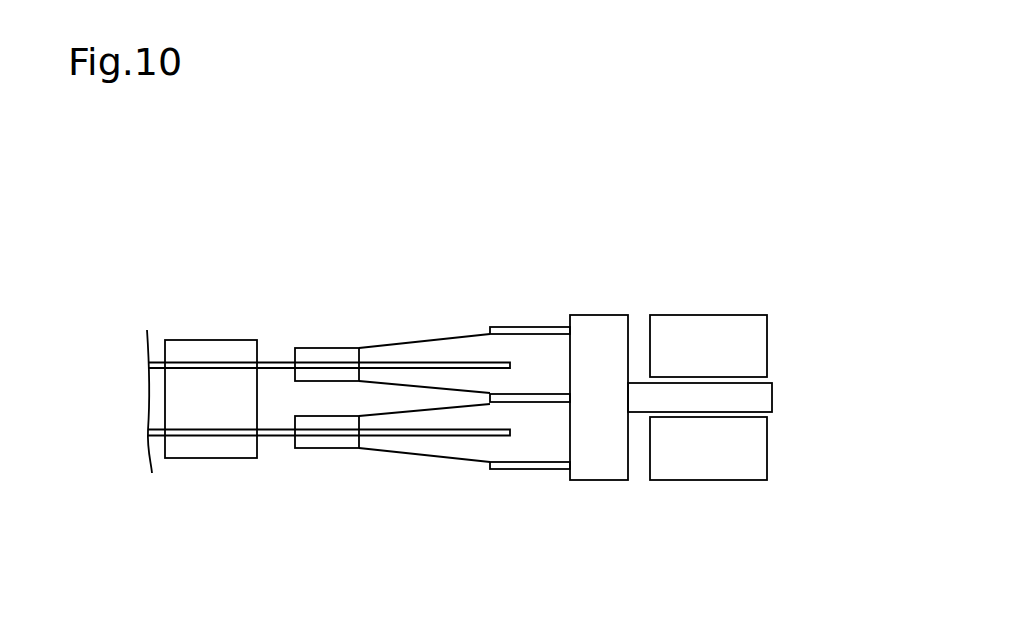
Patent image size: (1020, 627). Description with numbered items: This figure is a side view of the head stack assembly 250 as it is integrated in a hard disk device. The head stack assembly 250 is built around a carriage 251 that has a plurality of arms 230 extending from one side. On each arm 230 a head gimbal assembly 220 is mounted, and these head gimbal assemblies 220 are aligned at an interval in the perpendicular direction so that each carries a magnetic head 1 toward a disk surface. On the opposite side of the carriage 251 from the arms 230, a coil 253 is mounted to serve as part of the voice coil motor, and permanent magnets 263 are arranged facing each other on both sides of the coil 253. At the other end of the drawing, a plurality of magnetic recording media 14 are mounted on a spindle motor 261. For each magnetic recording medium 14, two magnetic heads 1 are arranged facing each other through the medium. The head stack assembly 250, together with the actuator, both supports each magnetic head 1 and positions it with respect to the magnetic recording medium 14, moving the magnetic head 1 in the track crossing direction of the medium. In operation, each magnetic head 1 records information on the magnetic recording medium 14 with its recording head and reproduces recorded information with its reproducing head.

The magnetic head 1 is at (358, 363).
The magnetic recording medium 14 is at (268, 357).
The head gimbal assembly 220 is at (418, 339).
The arm 230 is at (505, 327).
The head stack assembly 250 is at (715, 398).
The carriage 251 is at (603, 473).
The coil 253 is at (762, 400).
The spindle motor 261 is at (190, 345).
The permanent magnet 263 is at (700, 313).